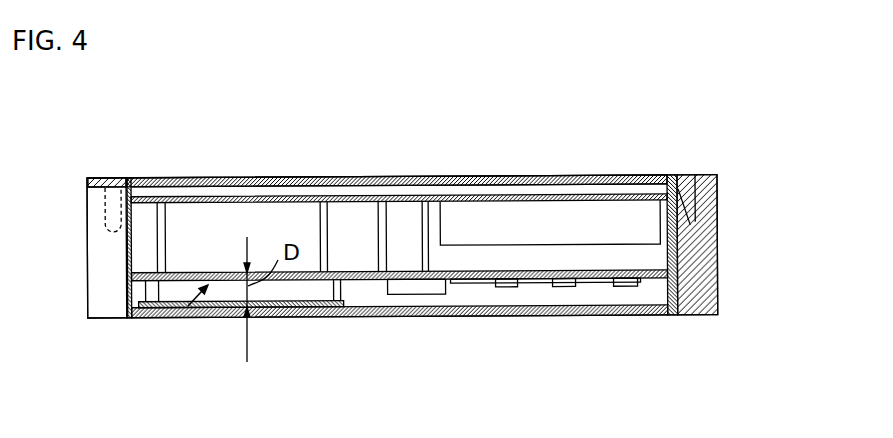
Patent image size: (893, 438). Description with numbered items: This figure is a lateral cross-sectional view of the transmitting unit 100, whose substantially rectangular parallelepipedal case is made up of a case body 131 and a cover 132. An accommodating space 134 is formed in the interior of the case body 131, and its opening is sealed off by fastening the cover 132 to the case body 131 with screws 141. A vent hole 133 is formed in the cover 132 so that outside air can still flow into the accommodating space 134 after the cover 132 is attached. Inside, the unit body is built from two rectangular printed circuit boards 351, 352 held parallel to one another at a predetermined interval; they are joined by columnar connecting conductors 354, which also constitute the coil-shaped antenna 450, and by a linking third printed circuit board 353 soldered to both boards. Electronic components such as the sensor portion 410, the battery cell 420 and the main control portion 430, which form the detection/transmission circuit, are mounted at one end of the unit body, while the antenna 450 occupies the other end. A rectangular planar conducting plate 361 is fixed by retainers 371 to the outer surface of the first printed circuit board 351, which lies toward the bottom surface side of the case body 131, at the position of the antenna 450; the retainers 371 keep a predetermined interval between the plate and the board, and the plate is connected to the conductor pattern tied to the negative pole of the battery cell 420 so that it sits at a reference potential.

The transmitting unit 100 is at (518, 143).
The case body 131 is at (100, 290).
The cover 132 is at (382, 178).
The vent hole 133 is at (168, 179).
The accommodating space 134 is at (263, 192).
The screws 141 is at (112, 186).
The first printed circuit board 351 is at (361, 282).
The second printed circuit board 352 is at (592, 190).
The third printed circuit board 353 is at (677, 305).
The columnar connecting conductors 354 is at (163, 229).
The planar conducting plate 361 is at (282, 318).
The retainers 371 is at (152, 294).
The sensor portion 410 is at (410, 287).
The battery cell 420 is at (520, 233).
The main control portion 430 is at (590, 285).
The antenna 450 is at (187, 320).